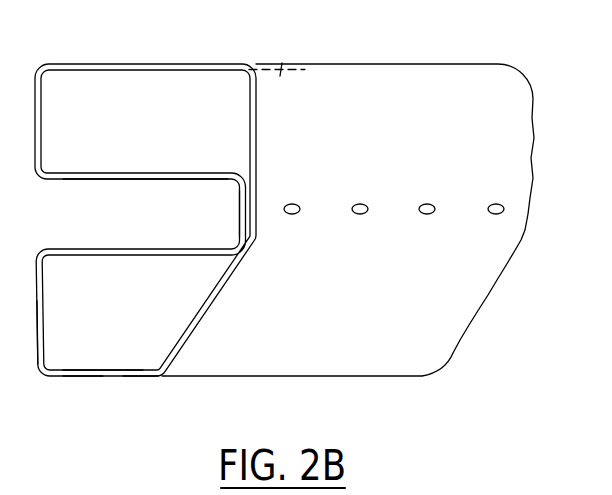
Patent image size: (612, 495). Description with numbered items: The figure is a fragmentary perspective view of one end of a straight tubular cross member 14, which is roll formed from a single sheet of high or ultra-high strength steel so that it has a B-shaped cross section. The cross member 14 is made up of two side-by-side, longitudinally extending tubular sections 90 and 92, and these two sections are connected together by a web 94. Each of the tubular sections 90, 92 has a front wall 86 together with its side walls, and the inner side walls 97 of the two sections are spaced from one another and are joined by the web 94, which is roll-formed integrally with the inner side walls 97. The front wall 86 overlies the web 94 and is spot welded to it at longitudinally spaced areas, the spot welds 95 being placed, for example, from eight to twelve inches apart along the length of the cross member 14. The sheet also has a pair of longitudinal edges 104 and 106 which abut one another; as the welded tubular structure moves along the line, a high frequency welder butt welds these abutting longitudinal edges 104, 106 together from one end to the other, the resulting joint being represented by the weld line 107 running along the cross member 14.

The cross member 14 is at (419, 56).
The front wall 86 is at (273, 55).
The tubular section 90 is at (34, 55).
The tubular section 92 is at (34, 365).
The web 94 is at (231, 202).
The spot weld 95 is at (415, 196).
The inner side wall 97 is at (123, 174).
The longitudinal edge 104 is at (78, 370).
The longitudinal edge 106 is at (127, 370).
The weld line 107 is at (110, 361).